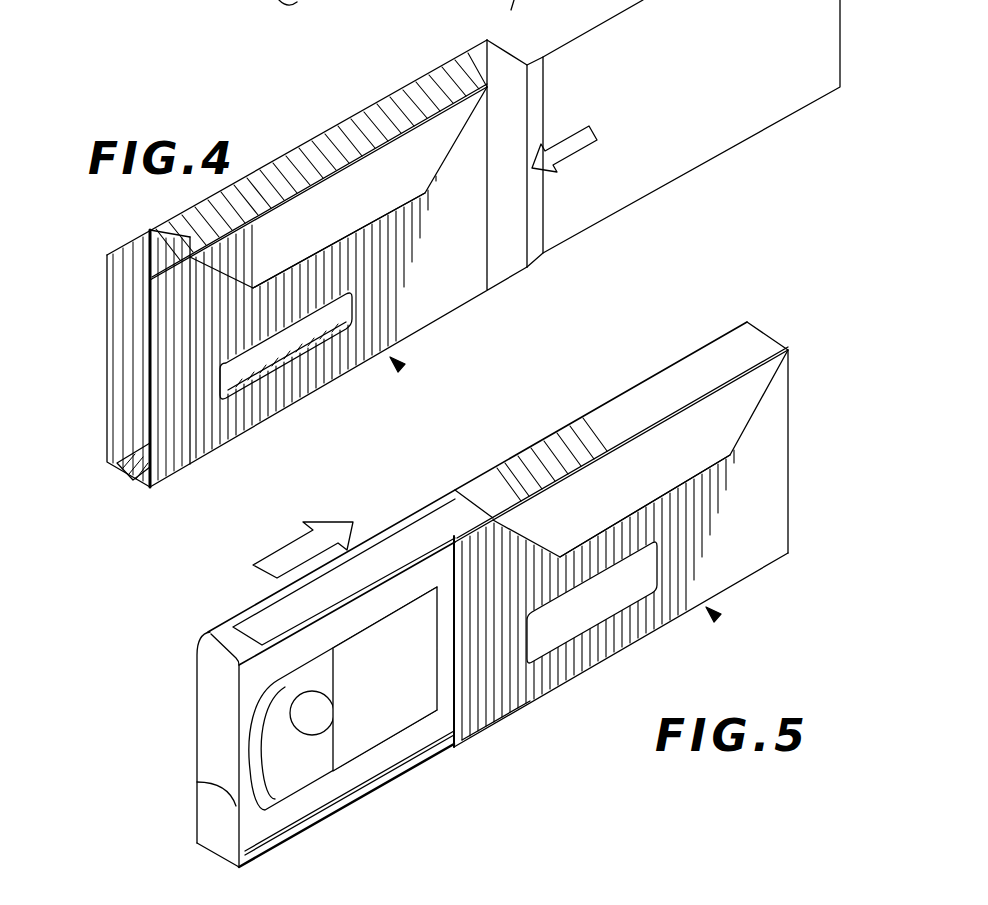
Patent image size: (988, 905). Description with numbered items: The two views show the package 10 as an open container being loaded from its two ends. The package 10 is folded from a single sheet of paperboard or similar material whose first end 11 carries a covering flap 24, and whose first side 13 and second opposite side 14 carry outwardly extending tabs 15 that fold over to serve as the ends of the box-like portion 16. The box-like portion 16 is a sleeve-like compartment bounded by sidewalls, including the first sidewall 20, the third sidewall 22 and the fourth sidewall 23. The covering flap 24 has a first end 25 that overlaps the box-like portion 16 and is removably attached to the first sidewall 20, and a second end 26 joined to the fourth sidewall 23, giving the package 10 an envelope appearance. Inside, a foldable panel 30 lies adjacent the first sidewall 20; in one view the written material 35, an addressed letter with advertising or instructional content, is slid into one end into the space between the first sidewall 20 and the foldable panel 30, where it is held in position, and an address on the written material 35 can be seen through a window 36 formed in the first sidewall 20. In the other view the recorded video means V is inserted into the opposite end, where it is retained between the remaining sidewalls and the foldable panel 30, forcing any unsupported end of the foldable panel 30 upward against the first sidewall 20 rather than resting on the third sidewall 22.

In FIG. 4, the package 10 is at (262, 140).
In FIG. 5, the package 10 is at (782, 302).
In FIG. 4, the first end 11 is at (268, 393).
In FIG. 5, the first end 11 is at (574, 655).
In FIG. 4, the first side 13 is at (503, 228).
In FIG. 5, the first side 13 is at (790, 507).
In FIG. 4, the second opposite side 14 is at (339, 0).
In FIG. 5, the second opposite side 14 is at (470, 703).
In FIG. 4, the tabs 15 is at (466, 58).
In FIG. 5, the tabs 15 is at (468, 565).
In FIG. 4, the box-like portion 16 is at (401, 368).
In FIG. 5, the box-like portion 16 is at (717, 618).
In FIG. 4, the first sidewall 20 is at (438, 265).
In FIG. 5, the first sidewall 20 is at (747, 543).
In FIG. 4, the third sidewall 22 is at (168, 242).
In FIG. 4, the fourth sidewall 23 is at (365, 148).
In FIG. 5, the fourth sidewall 23 is at (583, 447).
In FIG. 4, the covering flap 24 is at (430, 165).
In FIG. 5, the covering flap 24 is at (723, 423).
In FIG. 4, the first end 25 is at (368, 230).
In FIG. 5, the first end 25 is at (690, 487).
In FIG. 4, the second end 26 is at (430, 133).
In FIG. 5, the second end 26 is at (693, 403).
In FIG. 4, the foldable panel 30 is at (300, 335).
In FIG. 4, the written material 35 is at (700, 147).
In FIG. 5, the written material 35 is at (653, 630).
In FIG. 4, the window 36 is at (287, 375).
In FIG. 5, the window 36 is at (521, 705).
In FIG. 5, the recorded video means V is at (330, 820).